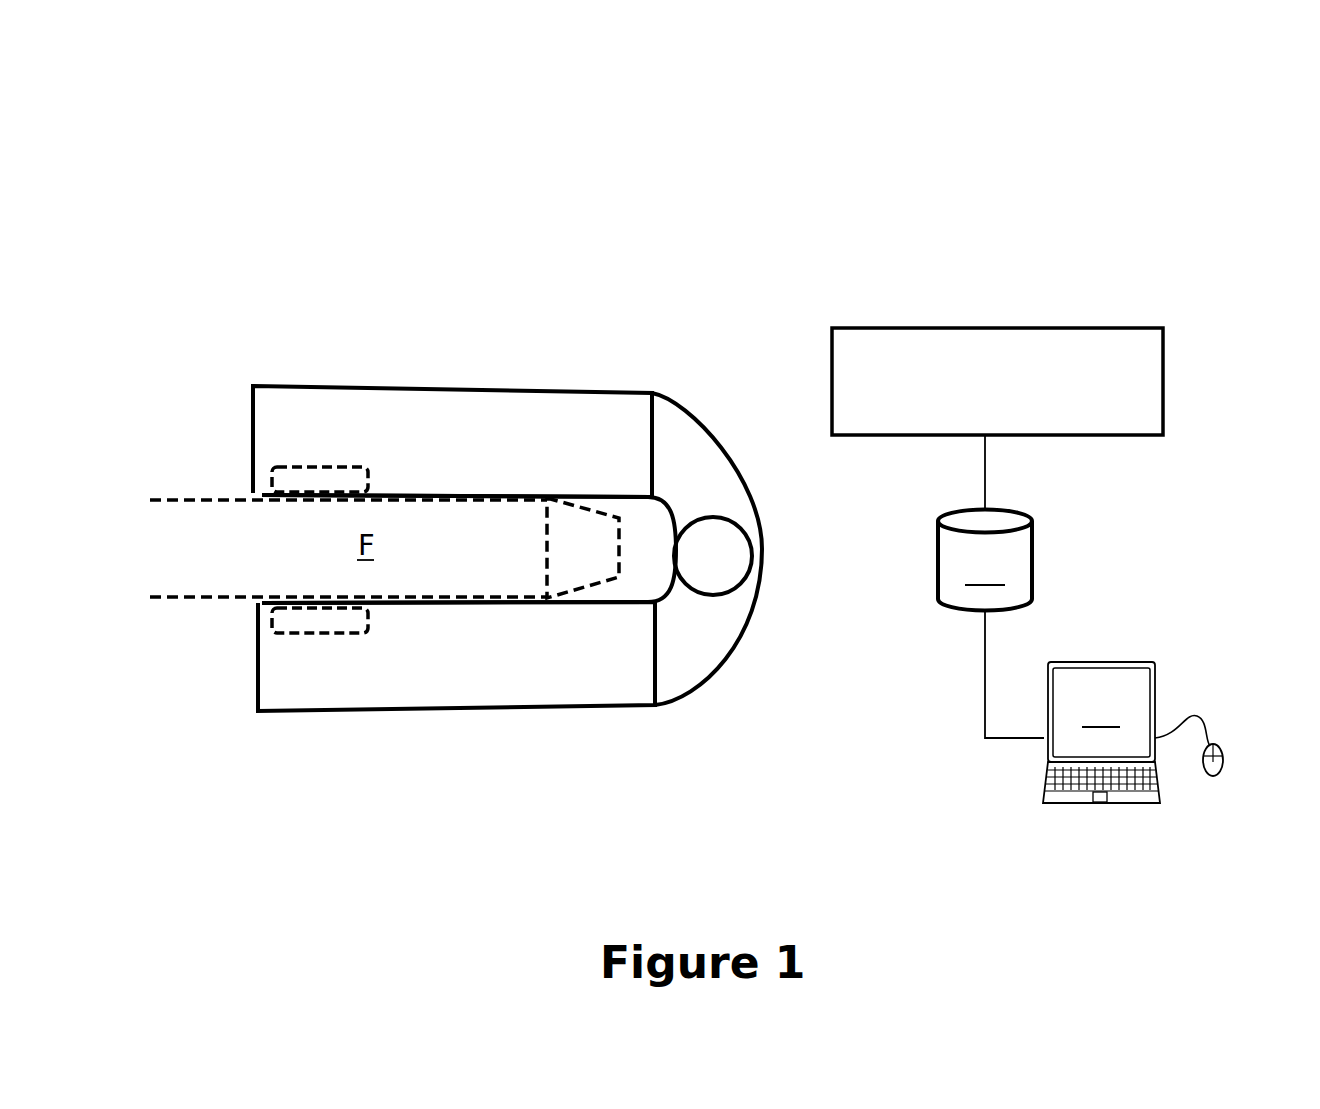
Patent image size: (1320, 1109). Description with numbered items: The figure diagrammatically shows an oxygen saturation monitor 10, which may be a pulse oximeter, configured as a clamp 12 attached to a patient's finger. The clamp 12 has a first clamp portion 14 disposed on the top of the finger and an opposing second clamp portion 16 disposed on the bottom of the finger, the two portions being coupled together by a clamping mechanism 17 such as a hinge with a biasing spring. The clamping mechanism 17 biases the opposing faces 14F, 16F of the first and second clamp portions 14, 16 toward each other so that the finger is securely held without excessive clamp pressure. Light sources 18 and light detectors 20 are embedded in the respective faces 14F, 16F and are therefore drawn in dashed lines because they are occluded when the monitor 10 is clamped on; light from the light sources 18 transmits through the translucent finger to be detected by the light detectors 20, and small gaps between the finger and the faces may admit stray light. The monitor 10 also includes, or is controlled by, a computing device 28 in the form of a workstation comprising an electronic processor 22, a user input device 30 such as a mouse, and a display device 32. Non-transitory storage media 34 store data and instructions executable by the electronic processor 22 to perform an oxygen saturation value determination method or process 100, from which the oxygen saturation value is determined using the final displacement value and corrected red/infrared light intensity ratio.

The oxygen saturation monitor 10 is at (183, 126).
The clamp 12 is at (233, 273).
The first clamp portion 14 is at (440, 389).
The opposing face of first clamp portion 14F is at (258, 496).
The second clamp portion 16 is at (500, 708).
The opposing face of second clamp portion 16F is at (258, 602).
The clamping mechanism 17 is at (706, 413).
The light sources 18 is at (325, 463).
The light detectors 20 is at (325, 636).
The electronic processor 22 is at (964, 711).
The computing device 28 is at (1203, 670).
The user input device 30 is at (1218, 776).
The display device 32 is at (1101, 712).
The non-transitory storage media 34 is at (985, 560).
The oxygen saturation value determination method or process 100 is at (1145, 358).